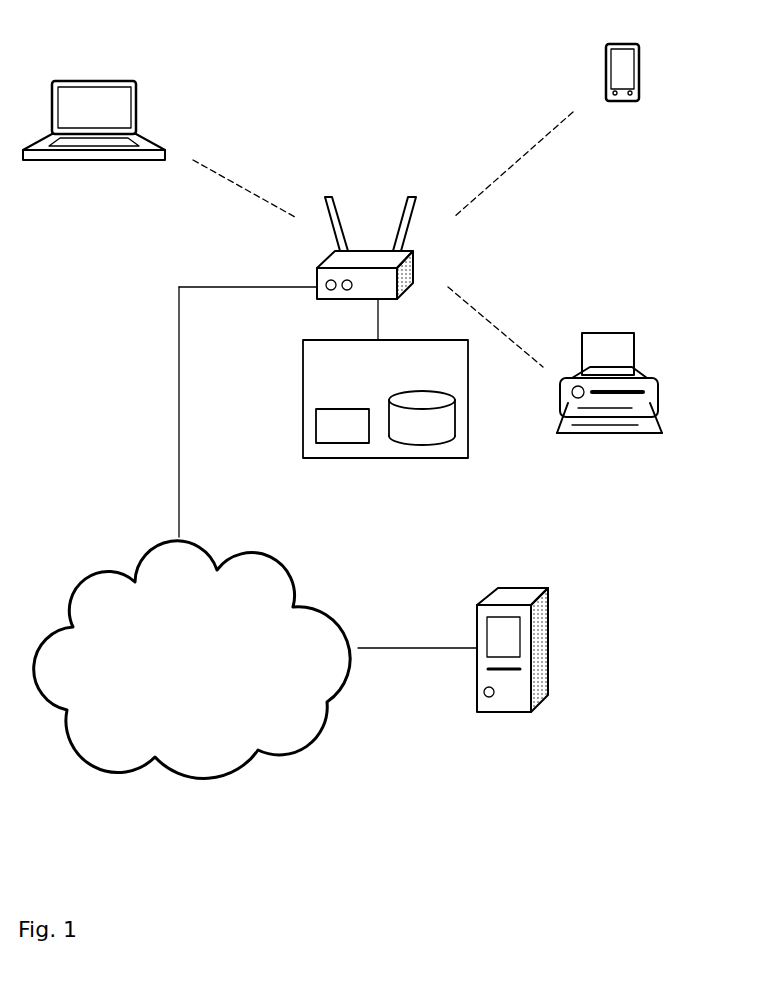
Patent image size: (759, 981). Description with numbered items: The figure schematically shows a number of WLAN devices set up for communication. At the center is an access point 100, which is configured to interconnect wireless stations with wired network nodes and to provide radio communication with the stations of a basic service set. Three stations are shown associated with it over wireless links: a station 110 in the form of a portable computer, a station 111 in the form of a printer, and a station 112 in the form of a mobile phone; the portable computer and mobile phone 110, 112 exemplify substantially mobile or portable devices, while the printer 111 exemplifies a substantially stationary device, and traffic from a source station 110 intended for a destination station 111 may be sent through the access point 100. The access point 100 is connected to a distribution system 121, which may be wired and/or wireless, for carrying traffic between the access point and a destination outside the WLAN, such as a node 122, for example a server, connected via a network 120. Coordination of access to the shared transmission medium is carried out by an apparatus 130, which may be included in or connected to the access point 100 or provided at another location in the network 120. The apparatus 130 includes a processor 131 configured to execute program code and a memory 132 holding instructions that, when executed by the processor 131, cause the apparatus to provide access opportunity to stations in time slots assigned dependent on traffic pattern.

The access point 100 is at (332, 300).
The station 110 is at (138, 118).
The station 111 is at (660, 385).
The station 112 is at (651, 63).
The network 120 is at (169, 666).
The distribution system 121 is at (186, 447).
The node 122 is at (557, 628).
The apparatus 130 is at (366, 370).
The processor 131 is at (323, 437).
The memory 132 is at (402, 437).